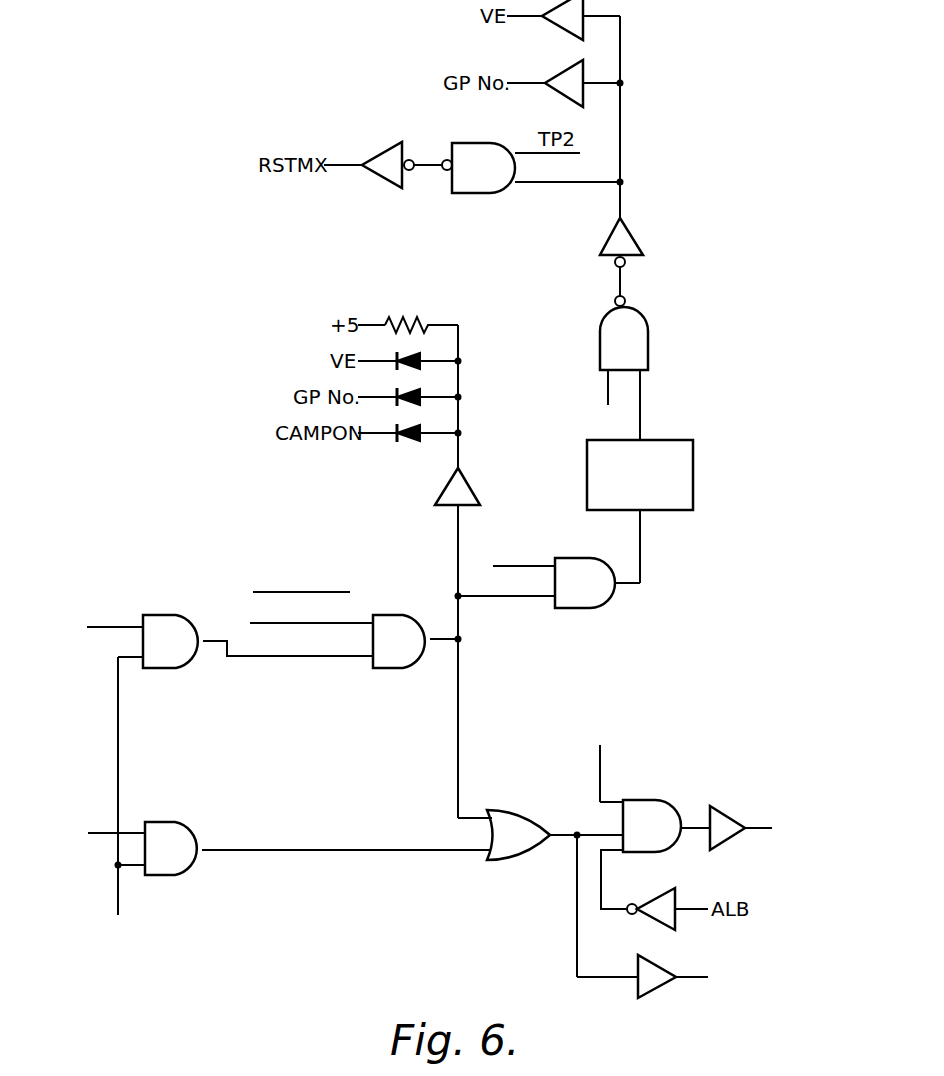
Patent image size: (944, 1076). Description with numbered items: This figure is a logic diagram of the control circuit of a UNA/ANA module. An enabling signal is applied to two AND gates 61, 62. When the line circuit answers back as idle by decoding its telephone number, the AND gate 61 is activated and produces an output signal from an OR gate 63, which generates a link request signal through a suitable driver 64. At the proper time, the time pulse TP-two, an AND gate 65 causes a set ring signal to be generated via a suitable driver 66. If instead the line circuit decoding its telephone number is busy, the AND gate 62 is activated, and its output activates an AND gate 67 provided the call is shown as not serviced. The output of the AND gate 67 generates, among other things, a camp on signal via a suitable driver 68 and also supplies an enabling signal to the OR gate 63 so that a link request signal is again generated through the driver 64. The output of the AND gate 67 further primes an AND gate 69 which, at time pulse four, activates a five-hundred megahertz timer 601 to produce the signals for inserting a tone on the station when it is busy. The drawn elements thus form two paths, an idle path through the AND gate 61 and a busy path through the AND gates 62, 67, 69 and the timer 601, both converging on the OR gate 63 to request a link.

The AND gate 61 is at (168, 822).
The AND gate 62 is at (165, 615).
The OR gate 63 is at (510, 865).
The driver 64 is at (632, 985).
The AND gate 65 is at (650, 800).
The driver 66 is at (718, 808).
The AND gate 67 is at (393, 613).
The driver 68 is at (440, 487).
The AND gate 69 is at (577, 610).
The 500 MHz timer 601 is at (695, 478).